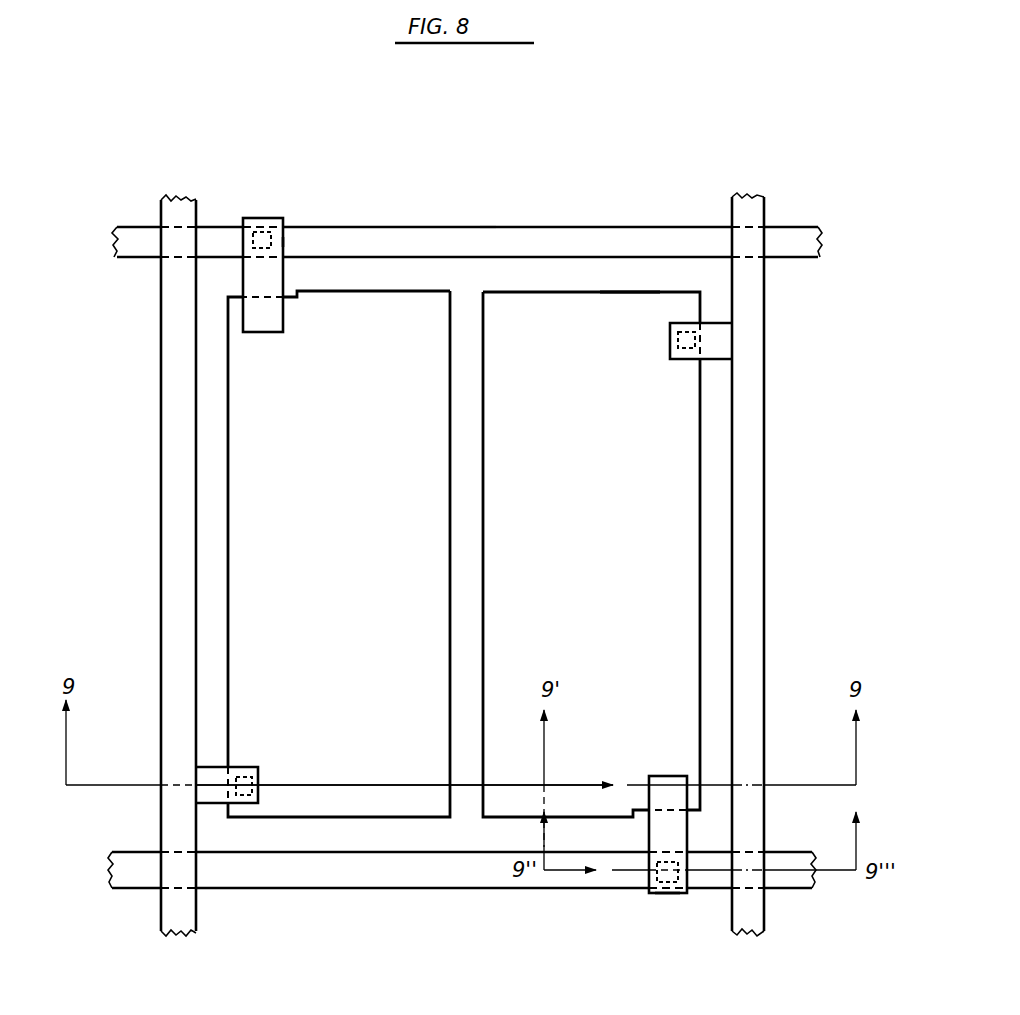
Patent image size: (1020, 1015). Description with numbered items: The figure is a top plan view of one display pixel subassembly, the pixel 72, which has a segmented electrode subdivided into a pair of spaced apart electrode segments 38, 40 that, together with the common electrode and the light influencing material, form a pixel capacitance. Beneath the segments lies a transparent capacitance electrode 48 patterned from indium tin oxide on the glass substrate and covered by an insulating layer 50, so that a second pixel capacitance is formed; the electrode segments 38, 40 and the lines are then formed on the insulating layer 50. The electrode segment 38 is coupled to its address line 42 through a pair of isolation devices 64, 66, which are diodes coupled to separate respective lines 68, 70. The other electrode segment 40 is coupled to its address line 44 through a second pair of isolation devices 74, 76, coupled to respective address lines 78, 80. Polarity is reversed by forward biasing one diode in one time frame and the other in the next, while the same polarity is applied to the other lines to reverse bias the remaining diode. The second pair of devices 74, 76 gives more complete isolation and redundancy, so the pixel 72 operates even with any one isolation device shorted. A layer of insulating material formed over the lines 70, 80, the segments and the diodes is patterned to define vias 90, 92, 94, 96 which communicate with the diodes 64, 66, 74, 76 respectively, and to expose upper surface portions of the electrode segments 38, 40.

The electrode segment 38 is at (342, 543).
The electrode segment 40 is at (607, 545).
The address line 42 is at (268, 316).
The address line 44 is at (668, 835).
The capacitance electrode 48 is at (468, 488).
The insulating layer 50 is at (630, 287).
The isolation device 64 is at (262, 772).
The isolation device 66 is at (292, 247).
The line 68 is at (178, 497).
The line 70 is at (603, 248).
The pixel 72 is at (490, 222).
The isolation device 74 is at (683, 365).
The isolation device 76 is at (661, 897).
The address line 78 is at (750, 518).
The address line 80 is at (337, 862).
The via 90 is at (244, 777).
The via 92 is at (262, 232).
The via 94 is at (670, 338).
The via 96 is at (670, 882).